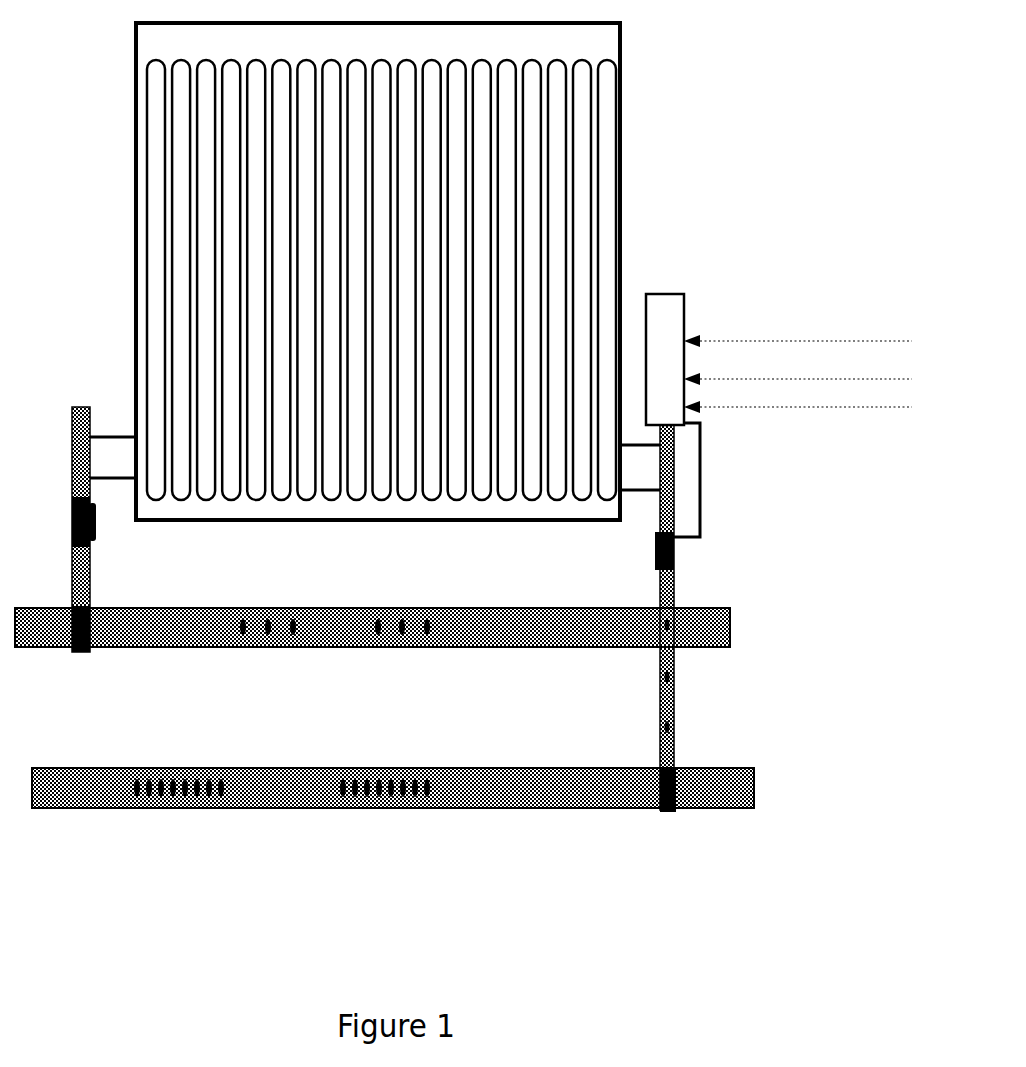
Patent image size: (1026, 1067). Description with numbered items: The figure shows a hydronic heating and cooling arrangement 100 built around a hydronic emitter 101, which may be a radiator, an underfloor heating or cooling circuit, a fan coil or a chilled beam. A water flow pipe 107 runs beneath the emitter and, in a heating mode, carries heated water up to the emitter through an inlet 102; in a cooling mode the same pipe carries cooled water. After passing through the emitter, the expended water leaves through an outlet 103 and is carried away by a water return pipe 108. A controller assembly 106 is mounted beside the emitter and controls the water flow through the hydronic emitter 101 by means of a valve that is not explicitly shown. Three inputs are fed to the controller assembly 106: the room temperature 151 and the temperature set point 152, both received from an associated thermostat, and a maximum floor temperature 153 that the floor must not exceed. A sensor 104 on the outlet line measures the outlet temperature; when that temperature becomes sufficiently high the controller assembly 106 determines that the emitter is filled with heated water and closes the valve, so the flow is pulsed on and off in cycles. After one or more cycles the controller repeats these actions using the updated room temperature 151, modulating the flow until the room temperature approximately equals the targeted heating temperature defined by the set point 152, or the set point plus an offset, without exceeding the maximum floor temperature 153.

The hydronic heating system 100 is at (778, 22).
The hydronic emitter 101 is at (637, 162).
The inlet 102 is at (103, 578).
The outlet 103 is at (660, 598).
The sensor 104 is at (674, 555).
The controller assembly 106 is at (672, 290).
The water flow pipe 107 is at (280, 648).
The water return pipe 108 is at (300, 812).
The room temperature 151 is at (728, 342).
The set point 152 is at (718, 380).
The maximum floor temperature 153 is at (712, 410).